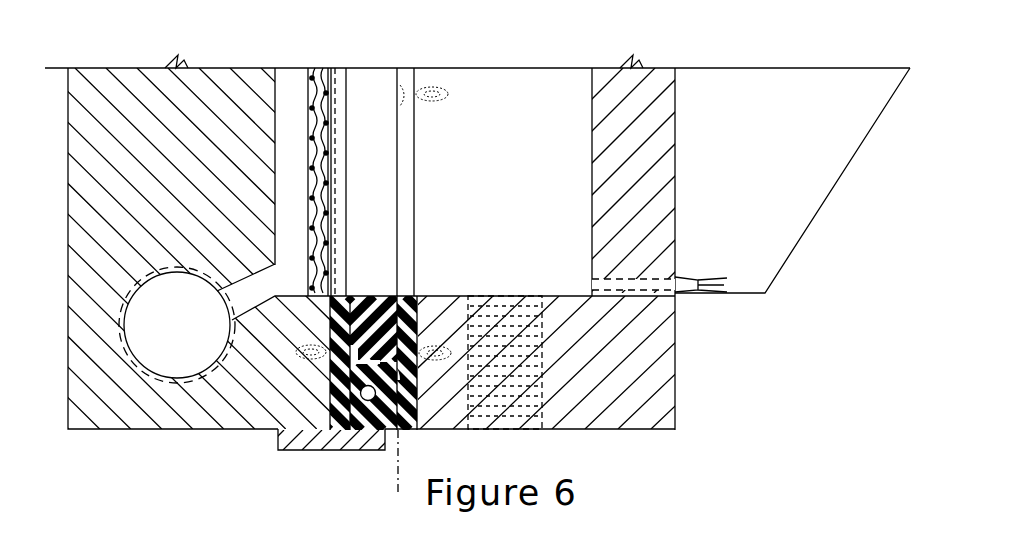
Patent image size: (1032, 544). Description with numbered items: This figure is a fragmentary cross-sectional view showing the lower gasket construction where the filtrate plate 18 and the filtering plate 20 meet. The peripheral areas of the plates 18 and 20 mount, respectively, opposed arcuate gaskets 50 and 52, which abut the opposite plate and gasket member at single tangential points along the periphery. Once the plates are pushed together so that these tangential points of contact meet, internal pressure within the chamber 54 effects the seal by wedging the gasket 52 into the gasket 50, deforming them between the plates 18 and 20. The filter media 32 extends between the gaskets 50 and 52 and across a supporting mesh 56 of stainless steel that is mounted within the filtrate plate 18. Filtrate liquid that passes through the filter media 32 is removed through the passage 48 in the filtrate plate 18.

The filtrate plate 18 is at (132, 78).
The filtering plate 20 is at (660, 80).
The filter media 32 is at (336, 147).
The passage 48 is at (175, 378).
The arcuate gasket 50 is at (364, 432).
The arcuate gasket 52 is at (376, 296).
The chamber 54 is at (532, 221).
The supporting mesh 56 is at (315, 90).